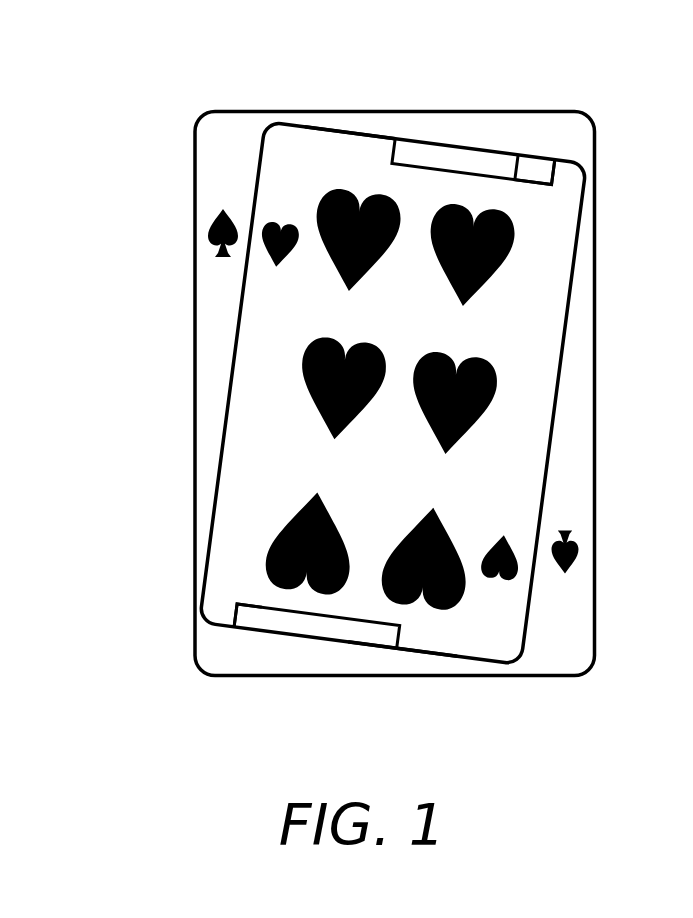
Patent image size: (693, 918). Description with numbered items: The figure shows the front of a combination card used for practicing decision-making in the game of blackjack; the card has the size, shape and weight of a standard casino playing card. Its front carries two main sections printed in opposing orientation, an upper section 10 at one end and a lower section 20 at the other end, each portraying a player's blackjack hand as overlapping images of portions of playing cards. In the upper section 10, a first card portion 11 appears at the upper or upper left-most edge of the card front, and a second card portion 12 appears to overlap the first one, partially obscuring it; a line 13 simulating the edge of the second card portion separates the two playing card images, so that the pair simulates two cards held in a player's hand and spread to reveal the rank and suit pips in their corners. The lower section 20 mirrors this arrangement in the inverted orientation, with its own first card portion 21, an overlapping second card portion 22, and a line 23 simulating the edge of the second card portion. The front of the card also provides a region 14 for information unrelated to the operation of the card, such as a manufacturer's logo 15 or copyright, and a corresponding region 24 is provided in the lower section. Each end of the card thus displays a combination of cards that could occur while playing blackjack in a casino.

The upper section of front of card 10 is at (185, 123).
The revealed portion of player's first card 11 is at (225, 137).
The revealed portion of player's second card 12 is at (293, 157).
The line simulating edge of card portion 13 is at (368, 133).
The region for producer's logo 14 is at (440, 160).
The producer's logo 15 is at (517, 170).
The lower section of front of card 20 is at (603, 462).
The revealed portion of player's first card 21 is at (562, 648).
The revealed portion of player's second card 22 is at (487, 648).
The line simulating edge of card portion 23 is at (372, 650).
The region for producer's logo 24 is at (307, 623).